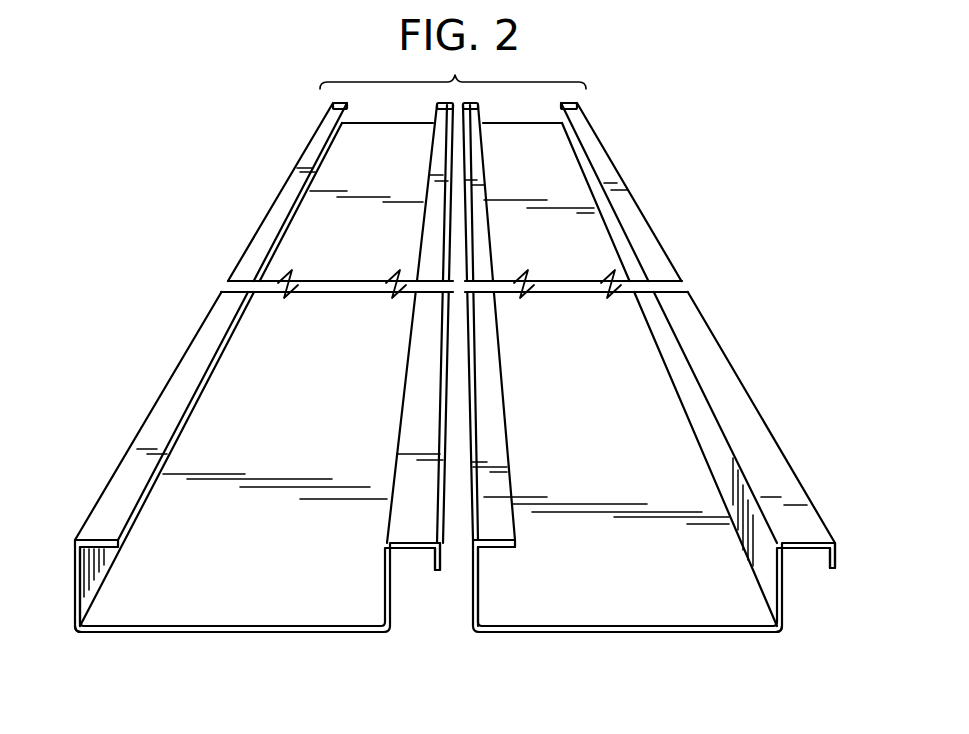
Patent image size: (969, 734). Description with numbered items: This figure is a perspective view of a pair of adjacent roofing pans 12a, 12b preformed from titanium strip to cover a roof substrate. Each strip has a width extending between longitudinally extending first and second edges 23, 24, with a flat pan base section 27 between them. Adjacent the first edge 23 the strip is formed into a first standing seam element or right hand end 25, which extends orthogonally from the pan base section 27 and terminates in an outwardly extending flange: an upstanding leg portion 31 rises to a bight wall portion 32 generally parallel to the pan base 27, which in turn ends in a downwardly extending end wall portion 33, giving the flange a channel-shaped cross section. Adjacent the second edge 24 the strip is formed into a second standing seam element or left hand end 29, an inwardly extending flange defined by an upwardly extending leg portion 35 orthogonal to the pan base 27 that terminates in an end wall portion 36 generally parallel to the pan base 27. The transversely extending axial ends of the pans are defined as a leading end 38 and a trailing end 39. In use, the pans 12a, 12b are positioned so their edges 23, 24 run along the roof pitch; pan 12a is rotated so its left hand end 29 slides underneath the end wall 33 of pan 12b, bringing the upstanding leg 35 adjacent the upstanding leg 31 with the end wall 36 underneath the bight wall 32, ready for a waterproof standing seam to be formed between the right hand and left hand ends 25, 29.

The roof pan 12a is at (718, 354).
The roof pan 12b is at (188, 388).
The first edge 23 is at (440, 572).
The second edge 24 is at (128, 527).
The right hand end 25 is at (412, 583).
The pan base section 27 is at (217, 615).
The left hand end 29 is at (68, 630).
The upstanding leg portion 31 is at (387, 589).
The bight wall portion 32 is at (410, 484).
The end wall portion 33 is at (435, 558).
The upwardly extending leg portion 35 is at (78, 594).
The end wall portion 36 is at (137, 470).
The leading end 38 is at (531, 124).
The trailing end 39 is at (334, 627).